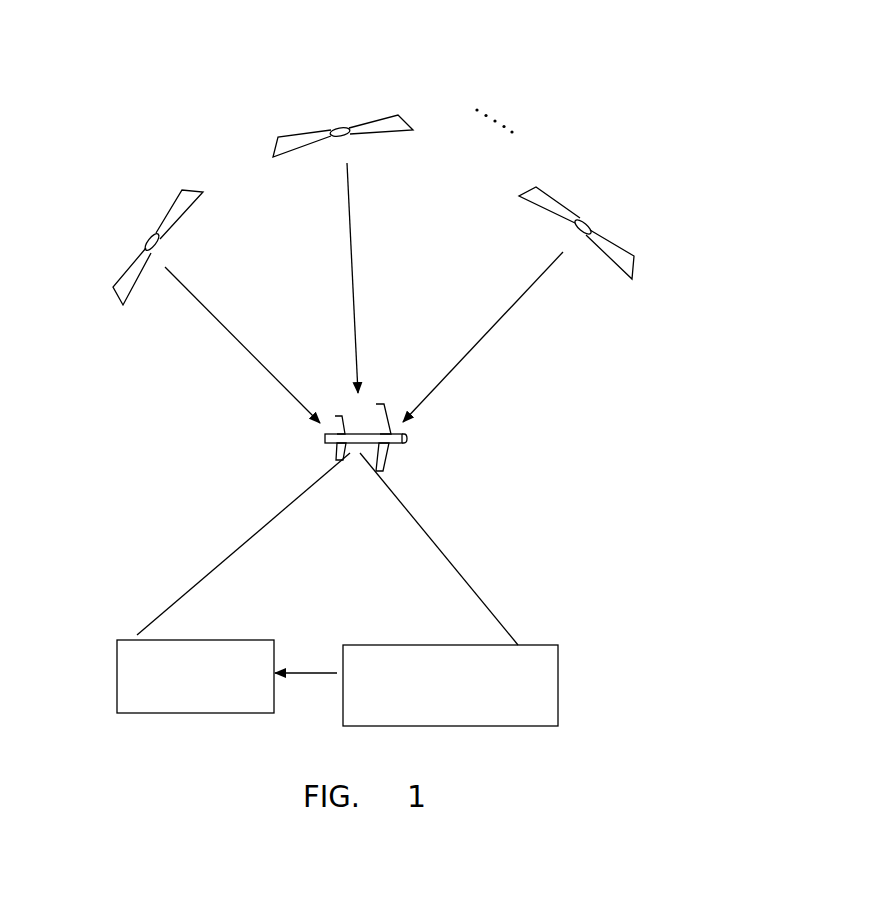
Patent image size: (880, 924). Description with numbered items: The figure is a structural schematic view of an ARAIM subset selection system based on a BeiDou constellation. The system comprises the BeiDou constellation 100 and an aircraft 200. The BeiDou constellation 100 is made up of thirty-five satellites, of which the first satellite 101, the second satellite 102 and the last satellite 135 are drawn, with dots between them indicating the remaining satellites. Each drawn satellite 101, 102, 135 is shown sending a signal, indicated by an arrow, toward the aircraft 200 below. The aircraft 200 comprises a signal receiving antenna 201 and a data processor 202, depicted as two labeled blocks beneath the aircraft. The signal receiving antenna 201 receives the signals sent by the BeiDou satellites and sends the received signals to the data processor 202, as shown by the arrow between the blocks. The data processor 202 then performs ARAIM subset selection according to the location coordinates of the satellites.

The BeiDou constellation 100 is at (175, 88).
The satellite 101 is at (135, 237).
The satellite 102 is at (340, 113).
The satellite 135 is at (597, 213).
The aircraft 200 is at (413, 453).
The signal receiving antenna 201 is at (450, 685).
The data processor 202 is at (227, 676).